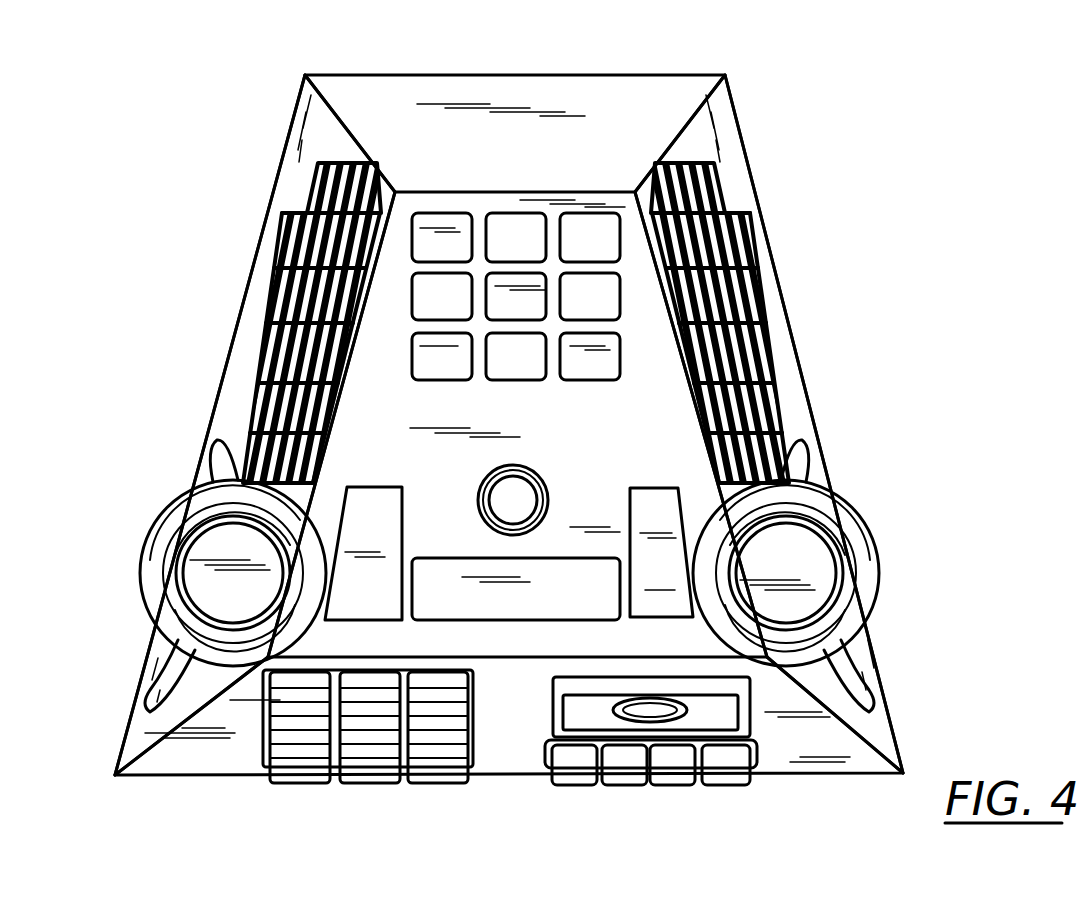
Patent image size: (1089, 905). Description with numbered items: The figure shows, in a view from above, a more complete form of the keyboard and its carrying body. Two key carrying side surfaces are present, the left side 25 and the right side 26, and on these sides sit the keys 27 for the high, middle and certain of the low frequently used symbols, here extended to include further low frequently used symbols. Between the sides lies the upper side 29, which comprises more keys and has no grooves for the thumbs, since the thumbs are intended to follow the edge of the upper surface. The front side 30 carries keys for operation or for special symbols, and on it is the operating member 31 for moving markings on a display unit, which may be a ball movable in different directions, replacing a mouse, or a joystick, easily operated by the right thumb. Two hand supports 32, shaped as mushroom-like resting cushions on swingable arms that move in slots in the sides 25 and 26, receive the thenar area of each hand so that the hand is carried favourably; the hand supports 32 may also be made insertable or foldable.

The left key carrying side surface 25 is at (252, 302).
The right key carrying side surface 26 is at (780, 345).
The keys 27 is at (294, 198).
The upper side 29 is at (760, 280).
The front side 30 is at (813, 752).
The operating member 31 is at (662, 716).
The hand support 32 is at (850, 490).